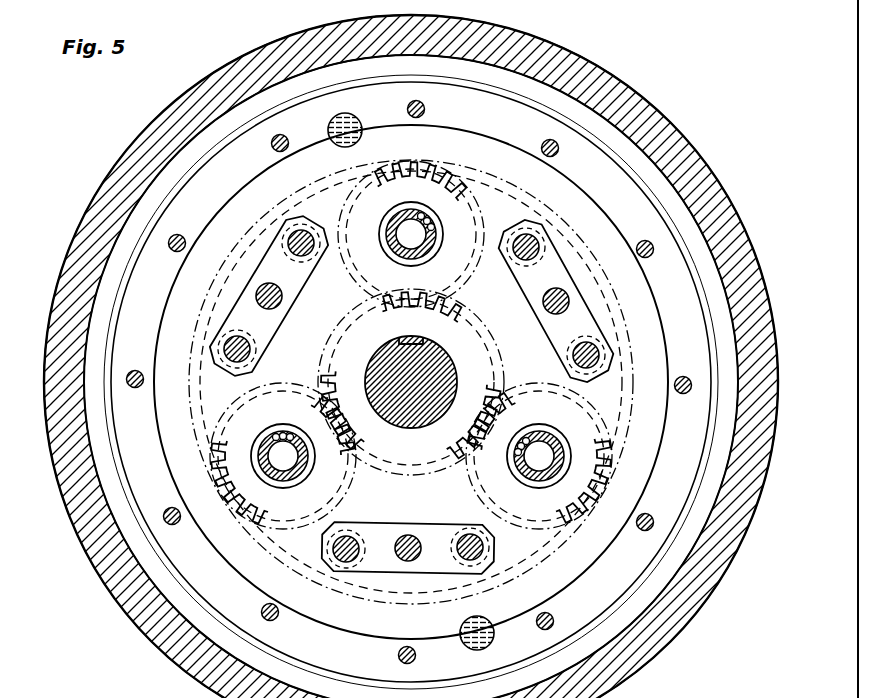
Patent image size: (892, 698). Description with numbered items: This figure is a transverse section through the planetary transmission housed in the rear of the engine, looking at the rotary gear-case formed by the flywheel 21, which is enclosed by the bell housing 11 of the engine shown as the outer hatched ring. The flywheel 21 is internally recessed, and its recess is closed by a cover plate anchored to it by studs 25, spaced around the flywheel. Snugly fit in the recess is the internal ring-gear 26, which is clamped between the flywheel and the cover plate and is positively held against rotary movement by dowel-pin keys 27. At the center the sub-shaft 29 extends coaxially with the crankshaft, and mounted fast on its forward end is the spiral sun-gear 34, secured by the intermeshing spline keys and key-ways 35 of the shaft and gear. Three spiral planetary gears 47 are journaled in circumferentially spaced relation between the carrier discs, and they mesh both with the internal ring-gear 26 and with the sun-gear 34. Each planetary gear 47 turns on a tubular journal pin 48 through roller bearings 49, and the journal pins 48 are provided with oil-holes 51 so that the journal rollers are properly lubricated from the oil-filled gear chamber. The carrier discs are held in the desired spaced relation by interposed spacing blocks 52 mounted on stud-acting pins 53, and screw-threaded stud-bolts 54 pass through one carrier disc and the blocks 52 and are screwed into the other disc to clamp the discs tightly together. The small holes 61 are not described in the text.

The bell housing 11 is at (722, 226).
The flywheel 21 is at (616, 572).
The studs 25 is at (426, 109).
The internal ring-gear 26 is at (212, 482).
The dowel-pin keys 27 is at (352, 125).
The sub-shaft 29 is at (414, 428).
The spiral sun-gear 34 is at (440, 302).
The spline keys and key-ways 35 is at (455, 397).
The spiral planetary gears 47 is at (430, 168).
The tubular journal pins 48 is at (301, 468).
The roller bearings 49 is at (433, 226).
The oil-holes 51 is at (400, 222).
The spacing blocks 52 is at (263, 341).
The stud-acting pins 53 is at (285, 297).
The stud-bolts 54 is at (297, 238).
The holes 61 is at (272, 148).